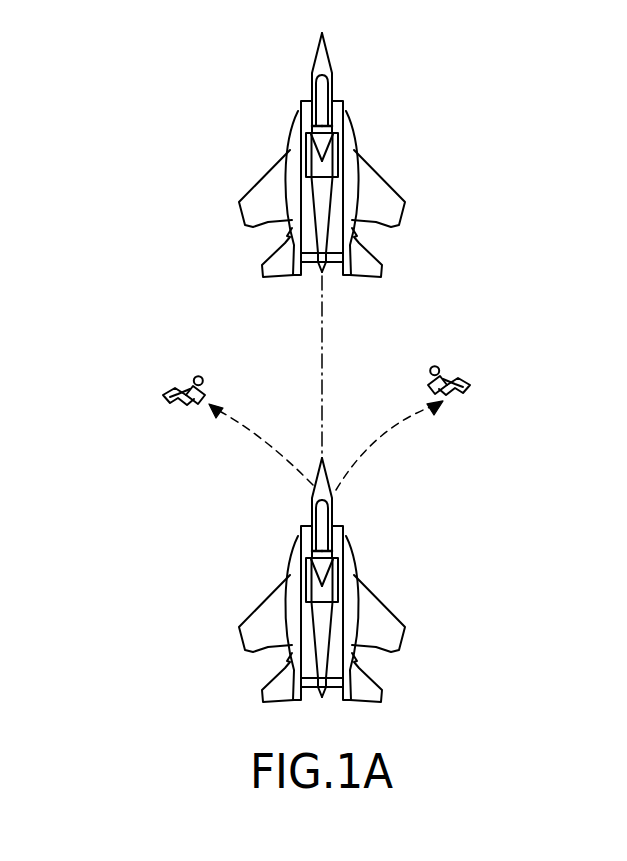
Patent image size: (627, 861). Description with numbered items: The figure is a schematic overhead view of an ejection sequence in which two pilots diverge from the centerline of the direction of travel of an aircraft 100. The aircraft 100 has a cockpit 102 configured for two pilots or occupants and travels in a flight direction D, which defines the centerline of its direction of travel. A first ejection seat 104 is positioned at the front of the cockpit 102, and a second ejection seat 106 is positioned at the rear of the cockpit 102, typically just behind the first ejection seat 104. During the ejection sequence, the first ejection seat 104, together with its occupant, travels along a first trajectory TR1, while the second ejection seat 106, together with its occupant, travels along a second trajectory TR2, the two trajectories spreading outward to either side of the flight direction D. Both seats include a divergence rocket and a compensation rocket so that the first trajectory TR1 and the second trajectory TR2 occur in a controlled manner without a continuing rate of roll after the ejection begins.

The aircraft 100 is at (270, 580).
The cockpit 102 is at (331, 514).
The first ejection seat 104 is at (157, 400).
The second ejection seat 106 is at (477, 385).
The flight direction D is at (323, 305).
The first trajectory TR1 is at (272, 445).
The second trajectory TR2 is at (387, 433).